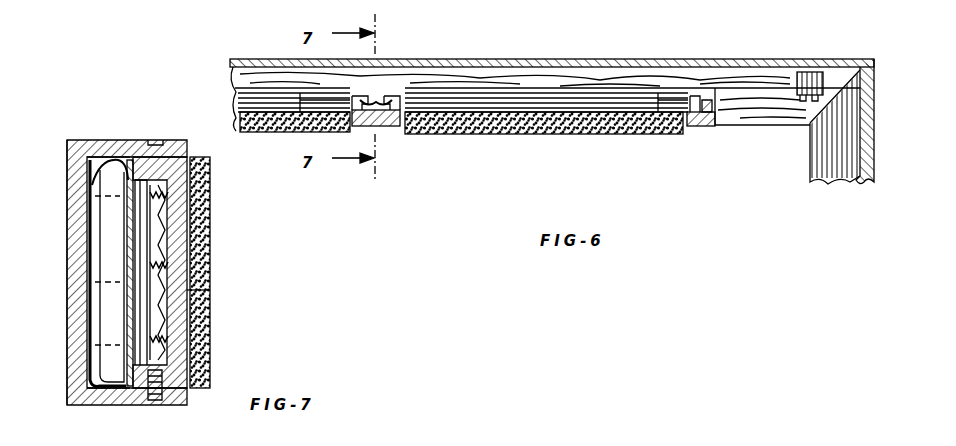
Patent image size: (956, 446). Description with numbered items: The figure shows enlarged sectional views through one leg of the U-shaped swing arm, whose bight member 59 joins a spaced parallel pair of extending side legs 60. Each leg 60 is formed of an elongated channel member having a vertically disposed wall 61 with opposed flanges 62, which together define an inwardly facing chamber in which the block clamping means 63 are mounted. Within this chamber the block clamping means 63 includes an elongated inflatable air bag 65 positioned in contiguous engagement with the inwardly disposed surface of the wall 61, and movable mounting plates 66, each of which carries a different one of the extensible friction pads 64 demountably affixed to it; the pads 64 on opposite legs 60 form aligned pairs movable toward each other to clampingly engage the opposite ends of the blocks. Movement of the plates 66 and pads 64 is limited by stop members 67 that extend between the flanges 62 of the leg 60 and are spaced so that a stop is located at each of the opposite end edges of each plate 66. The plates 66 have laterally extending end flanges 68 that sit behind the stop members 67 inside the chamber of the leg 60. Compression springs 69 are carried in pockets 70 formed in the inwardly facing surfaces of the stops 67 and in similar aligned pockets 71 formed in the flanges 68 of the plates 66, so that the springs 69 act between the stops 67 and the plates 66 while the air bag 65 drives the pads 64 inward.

In FIG. 6, the bight member 59 is at (818, 178).
In FIG. 6, the side legs 60 is at (540, 60).
In FIG. 7, the side legs 60 is at (67, 152).
In FIG. 6, the wall 61 is at (474, 66).
In FIG. 7, the wall 61 is at (77, 226).
In FIG. 6, the flanges 62 is at (780, 120).
In FIG. 7, the flanges 62 is at (132, 140).
In FIG. 6, the block clamping means 63 is at (488, 140).
In FIG. 7, the block clamping means 63 is at (250, 285).
In FIG. 6, the friction pads 64 is at (284, 132).
In FIG. 7, the friction pads 64 is at (212, 158).
In FIG. 6, the inflatable air bag 65 is at (236, 80).
In FIG. 7, the inflatable air bag 65 is at (94, 150).
In FIG. 6, the mounting plates 66 is at (268, 98).
In FIG. 7, the mounting plates 66 is at (180, 245).
In FIG. 6, the stop members 67 is at (396, 127).
In FIG. 7, the stop members 67 is at (196, 303).
In FIG. 6, the end flanges 68 is at (366, 100).
In FIG. 7, the end flanges 68 is at (137, 228).
In FIG. 6, the compression springs 69 is at (380, 104).
In FIG. 7, the compression springs 69 is at (150, 298).
In FIG. 7, the pockets 70 is at (190, 197).
In FIG. 7, the pockets 71 is at (96, 196).